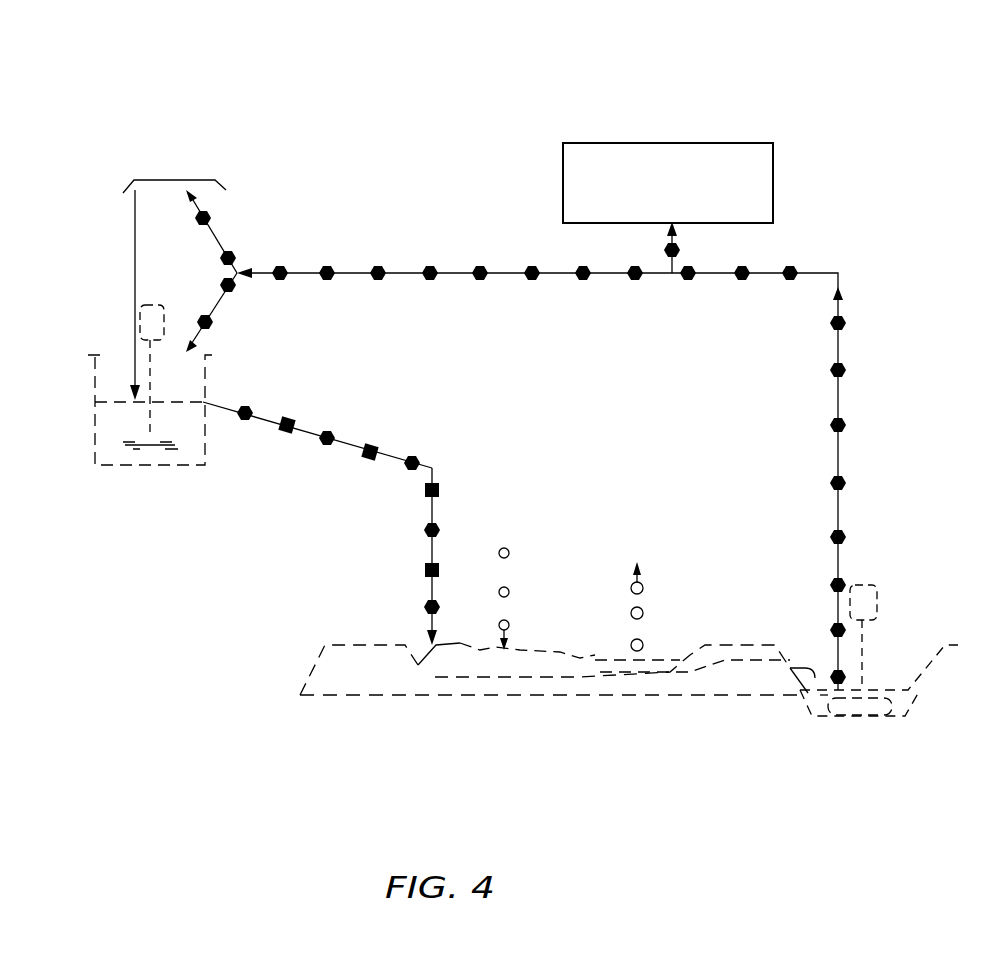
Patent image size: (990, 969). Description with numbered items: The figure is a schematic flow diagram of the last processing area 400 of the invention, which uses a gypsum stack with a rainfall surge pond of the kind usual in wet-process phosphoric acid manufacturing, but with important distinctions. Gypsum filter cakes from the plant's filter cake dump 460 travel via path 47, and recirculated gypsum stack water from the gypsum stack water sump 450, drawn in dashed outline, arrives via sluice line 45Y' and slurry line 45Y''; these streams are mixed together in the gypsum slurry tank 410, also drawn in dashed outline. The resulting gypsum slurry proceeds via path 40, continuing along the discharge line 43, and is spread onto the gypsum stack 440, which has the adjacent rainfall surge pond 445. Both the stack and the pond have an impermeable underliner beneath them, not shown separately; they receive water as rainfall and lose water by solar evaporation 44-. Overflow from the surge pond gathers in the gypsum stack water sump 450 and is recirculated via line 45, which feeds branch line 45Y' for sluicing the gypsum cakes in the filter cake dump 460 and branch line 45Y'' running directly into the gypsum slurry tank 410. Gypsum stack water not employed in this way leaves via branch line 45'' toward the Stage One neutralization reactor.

The last processing area 400 is at (434, 106).
The filter cake dump 460 is at (226, 190).
The path 47 is at (136, 215).
The sluice line 45Y' is at (248, 231).
The slurry line 45Y'' is at (193, 308).
The line 45 is at (562, 460).
The branch line 45'' is at (668, 208).
The gypsum slurry tank 410 is at (205, 465).
The path 40 is at (333, 430).
The gypsum slurry discharge line 43 is at (424, 577).
The solar evaporation 44- is at (643, 585).
The rainfall surge pond 445 is at (587, 655).
The gypsum stack 440 is at (294, 696).
The gypsum stack water sump 450 is at (904, 690).